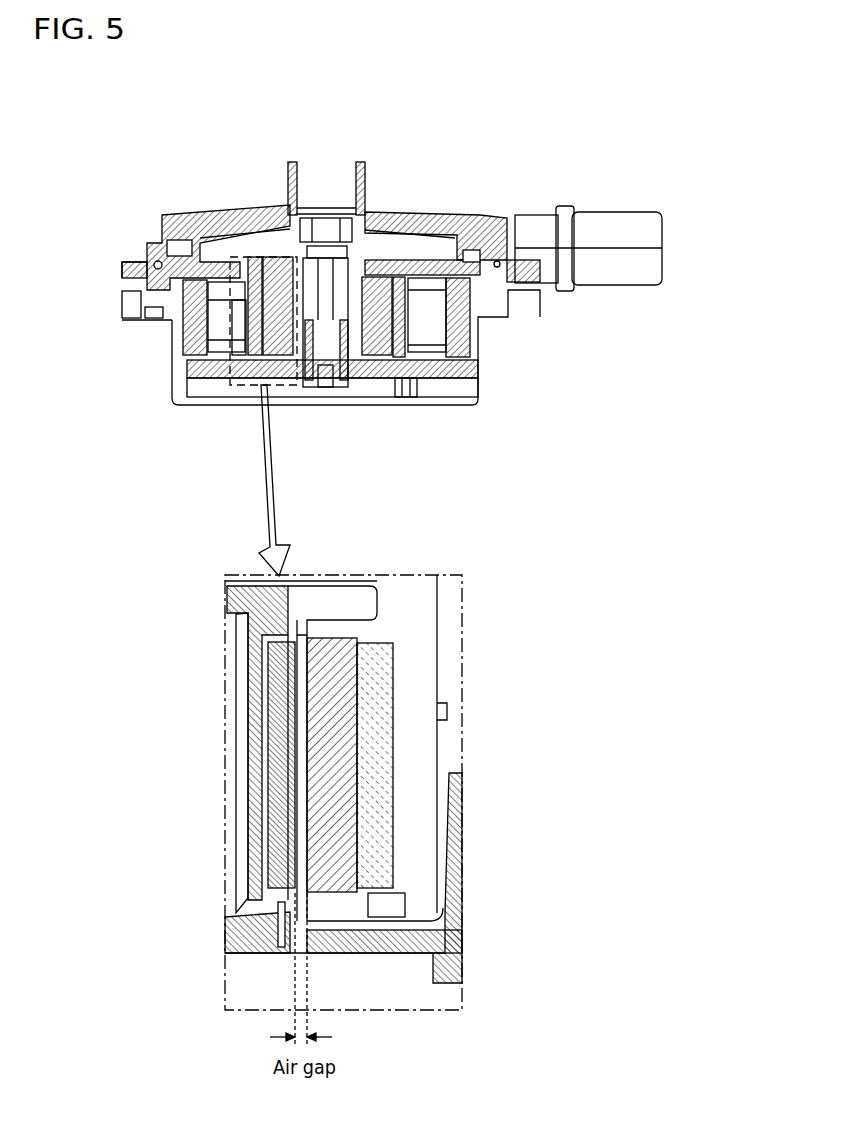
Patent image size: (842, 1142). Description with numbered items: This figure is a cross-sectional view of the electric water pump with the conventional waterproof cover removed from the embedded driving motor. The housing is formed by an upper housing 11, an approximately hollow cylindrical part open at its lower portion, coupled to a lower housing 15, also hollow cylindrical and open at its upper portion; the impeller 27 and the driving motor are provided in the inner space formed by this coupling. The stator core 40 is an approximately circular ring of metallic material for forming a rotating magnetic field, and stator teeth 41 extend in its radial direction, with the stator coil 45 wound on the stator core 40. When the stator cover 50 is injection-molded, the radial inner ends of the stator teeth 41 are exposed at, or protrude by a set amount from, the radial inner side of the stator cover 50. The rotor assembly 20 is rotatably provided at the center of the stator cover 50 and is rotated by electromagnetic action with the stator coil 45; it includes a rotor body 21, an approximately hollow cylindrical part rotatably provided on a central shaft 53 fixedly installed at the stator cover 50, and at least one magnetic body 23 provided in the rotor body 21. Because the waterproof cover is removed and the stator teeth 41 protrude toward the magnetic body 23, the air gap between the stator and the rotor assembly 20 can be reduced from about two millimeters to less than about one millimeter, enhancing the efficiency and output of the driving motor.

The upper housing 11 is at (146, 246).
The lower housing 15 is at (172, 392).
The rotor assembly 20 is at (352, 347).
The rotor body 21 is at (405, 385).
The magnetic body 23 is at (282, 280).
The impeller 27 is at (418, 245).
The stator core 40 is at (180, 332).
The stator teeth 41 is at (247, 278).
The stator coil 45 is at (237, 338).
The stator cover 50 is at (208, 372).
The central shaft 53 is at (345, 267).